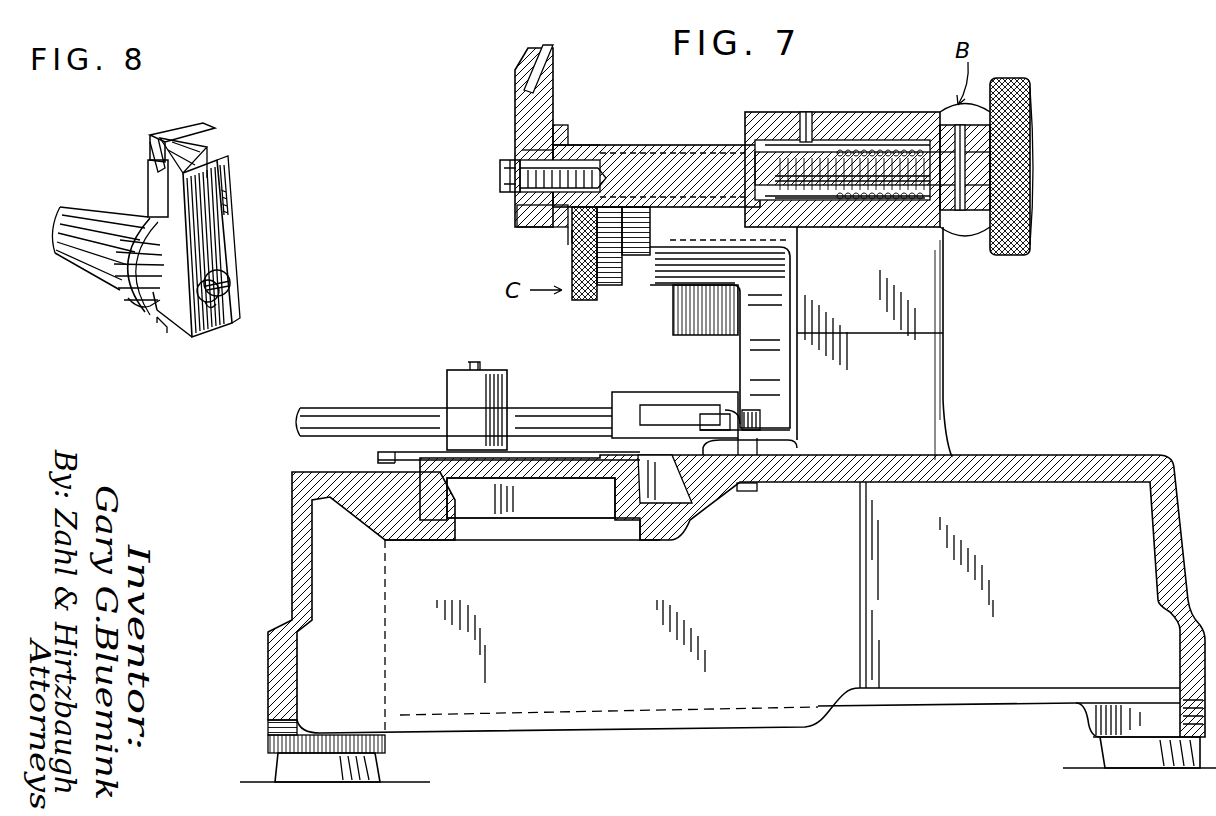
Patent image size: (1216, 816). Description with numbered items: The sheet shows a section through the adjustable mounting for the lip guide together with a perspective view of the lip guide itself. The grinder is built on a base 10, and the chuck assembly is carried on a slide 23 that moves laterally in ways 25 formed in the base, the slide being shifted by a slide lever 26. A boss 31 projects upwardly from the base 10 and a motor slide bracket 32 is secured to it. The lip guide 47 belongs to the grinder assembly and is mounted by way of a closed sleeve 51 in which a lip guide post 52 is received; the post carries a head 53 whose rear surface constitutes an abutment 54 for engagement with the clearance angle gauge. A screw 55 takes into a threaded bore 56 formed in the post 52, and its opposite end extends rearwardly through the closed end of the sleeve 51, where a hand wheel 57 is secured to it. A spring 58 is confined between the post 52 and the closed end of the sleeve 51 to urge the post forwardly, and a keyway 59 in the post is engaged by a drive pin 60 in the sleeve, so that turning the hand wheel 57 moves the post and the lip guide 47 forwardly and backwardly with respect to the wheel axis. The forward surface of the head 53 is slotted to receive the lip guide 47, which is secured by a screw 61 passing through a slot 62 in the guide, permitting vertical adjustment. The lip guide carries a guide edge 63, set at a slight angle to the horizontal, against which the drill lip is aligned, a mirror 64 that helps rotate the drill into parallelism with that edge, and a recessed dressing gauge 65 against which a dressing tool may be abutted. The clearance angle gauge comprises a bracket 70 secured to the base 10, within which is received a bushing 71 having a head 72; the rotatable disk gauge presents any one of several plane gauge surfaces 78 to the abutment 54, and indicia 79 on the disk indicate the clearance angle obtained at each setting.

In FIG. 7, the base 10 is at (1078, 456).
In FIG. 7, the slide 23 is at (545, 462).
In FIG. 7, the ways 25 is at (376, 470).
In FIG. 7, the slide lever 26 is at (355, 410).
In FIG. 7, the boss 31 is at (932, 398).
In FIG. 7, the motor slide bracket 32 is at (690, 322).
In FIG. 8, the lip guide 47 is at (252, 258).
In FIG. 7, the closed sleeve 51 is at (875, 112).
In FIG. 7, the lip guide post 52 is at (692, 145).
In FIG. 8, the lip guide post 52 is at (82, 258).
In FIG. 7, the head 53 is at (570, 135).
In FIG. 8, the head 53 is at (128, 305).
In FIG. 7, the abutment 54 is at (590, 146).
In FIG. 8, the abutment 54 is at (108, 298).
In FIG. 7, the screw 55 is at (878, 200).
In FIG. 7, the threaded bore 56 is at (760, 150).
In FIG. 7, the hand wheel 57 is at (1010, 80).
In FIG. 7, the spring 58 is at (858, 205).
In FIG. 7, the keyway 59 is at (825, 120).
In FIG. 7, the drive pin 60 is at (808, 112).
In FIG. 7, the screw 61 is at (505, 188).
In FIG. 8, the screw 61 is at (236, 284).
In FIG. 7, the slot 62 is at (522, 152).
In FIG. 8, the slot 62 is at (216, 305).
In FIG. 7, the guide edge 63 is at (515, 65).
In FIG. 8, the guide edge 63 is at (195, 140).
In FIG. 7, the mirror 64 is at (540, 48).
In FIG. 8, the mirror 64 is at (150, 150).
In FIG. 8, the dressing gauge 65 is at (228, 175).
In FIG. 7, the bracket 70 is at (800, 371).
In FIG. 7, the bushing 71 is at (636, 257).
In FIG. 7, the head 72 is at (607, 288).
In FIG. 7, the gauge surfaces 78 is at (572, 235).
In FIG. 7, the indicia 79 is at (585, 300).